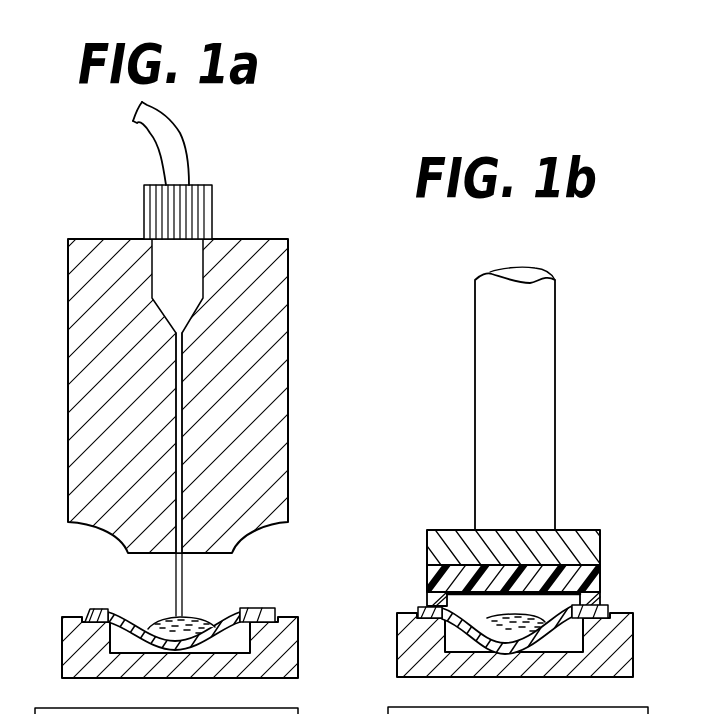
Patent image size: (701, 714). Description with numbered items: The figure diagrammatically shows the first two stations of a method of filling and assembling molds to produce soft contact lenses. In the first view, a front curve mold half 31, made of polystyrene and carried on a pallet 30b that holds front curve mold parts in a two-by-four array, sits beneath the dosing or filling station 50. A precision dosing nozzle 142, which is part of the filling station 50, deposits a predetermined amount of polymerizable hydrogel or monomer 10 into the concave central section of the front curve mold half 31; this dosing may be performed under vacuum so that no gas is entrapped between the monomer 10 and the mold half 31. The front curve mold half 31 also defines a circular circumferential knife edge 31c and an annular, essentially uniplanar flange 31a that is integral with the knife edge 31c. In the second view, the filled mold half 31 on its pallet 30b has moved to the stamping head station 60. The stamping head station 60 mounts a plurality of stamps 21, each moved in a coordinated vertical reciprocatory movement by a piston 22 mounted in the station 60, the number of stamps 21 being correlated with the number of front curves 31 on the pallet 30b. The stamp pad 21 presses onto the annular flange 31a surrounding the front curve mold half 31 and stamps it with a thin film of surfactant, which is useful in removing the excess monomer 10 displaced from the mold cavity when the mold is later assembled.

In FIG. 1a, the dosing or filling station 50 is at (310, 452).
In FIG. 1a, the precision dosing nozzle 142 is at (184, 567).
In FIG. 1a, the pallet 30b is at (70, 645).
In FIG. 1b, the pallet 30b is at (403, 640).
In FIG. 1a, the front curve mold half 31 is at (233, 612).
In FIG. 1b, the front curve mold half 31 is at (462, 640).
In FIG. 1a, the circumferential knife edge 31c is at (120, 612).
In FIG. 1a, the annular flange 31a is at (262, 610).
In FIG. 1a, the polymerizable hydrogel or monomer 10 is at (158, 622).
In FIG. 1b, the polymerizable hydrogel or monomer 10 is at (487, 616).
In FIG. 1b, the stamping head station 60 is at (529, 440).
In FIG. 1b, the piston 22 is at (535, 432).
In FIG. 1b, the stamp pad 21 is at (604, 582).